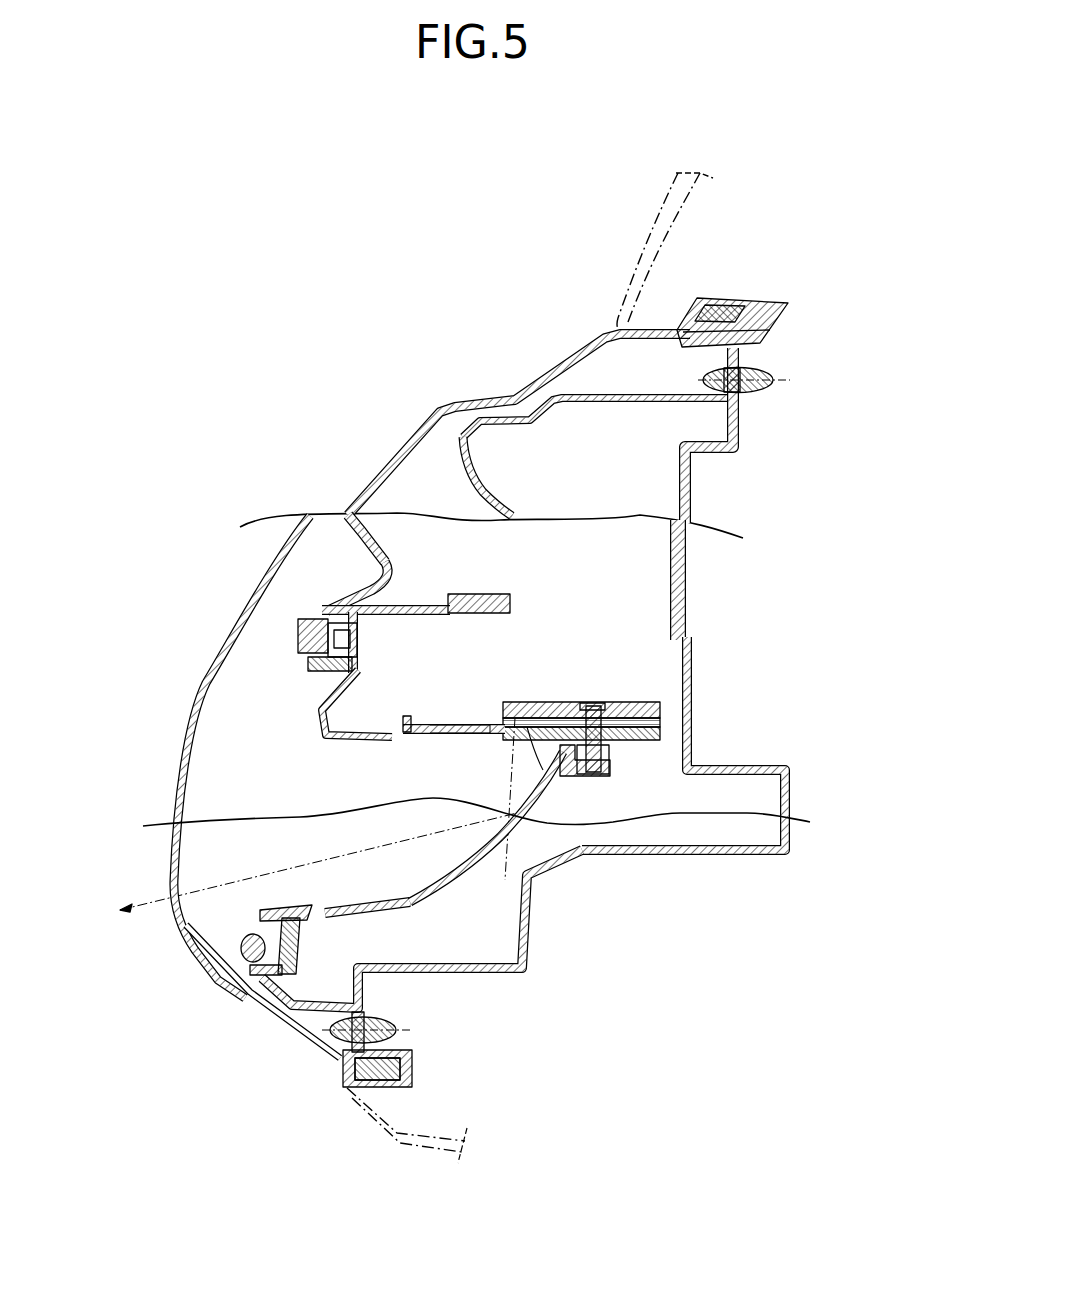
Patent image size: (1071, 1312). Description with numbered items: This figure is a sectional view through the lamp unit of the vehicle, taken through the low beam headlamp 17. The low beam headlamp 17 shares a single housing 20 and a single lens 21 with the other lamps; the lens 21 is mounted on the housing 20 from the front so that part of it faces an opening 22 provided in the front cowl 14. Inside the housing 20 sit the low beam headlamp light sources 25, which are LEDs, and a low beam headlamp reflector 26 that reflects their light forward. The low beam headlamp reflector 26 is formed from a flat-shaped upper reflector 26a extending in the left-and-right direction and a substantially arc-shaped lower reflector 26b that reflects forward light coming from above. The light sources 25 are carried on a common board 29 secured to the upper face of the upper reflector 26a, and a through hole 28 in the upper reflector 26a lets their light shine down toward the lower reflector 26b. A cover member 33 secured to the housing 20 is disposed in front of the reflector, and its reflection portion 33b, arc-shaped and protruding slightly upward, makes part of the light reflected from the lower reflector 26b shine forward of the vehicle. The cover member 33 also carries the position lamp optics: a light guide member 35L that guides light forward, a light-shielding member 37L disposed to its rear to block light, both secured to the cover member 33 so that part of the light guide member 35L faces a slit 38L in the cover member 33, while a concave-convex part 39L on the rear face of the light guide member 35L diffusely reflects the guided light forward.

The front cowl 14 is at (650, 233).
The low beam headlamp 17 is at (178, 843).
The housing 20 is at (610, 858).
The lens 21 is at (212, 687).
The opening 22 is at (588, 350).
The low beam headlamp light source 25 is at (510, 737).
The low beam headlamp reflector 26 is at (420, 910).
The upper reflector 26a is at (450, 727).
The lower reflector 26b is at (462, 878).
The through hole 28 is at (562, 752).
The board 29 is at (630, 706).
The cover member 33 is at (360, 545).
The reflection portion 33b is at (353, 733).
The light guide member 35L is at (297, 630).
The light-shielding member 37L is at (362, 637).
The slit 38L is at (323, 617).
The concave-convex part 39L is at (267, 913).